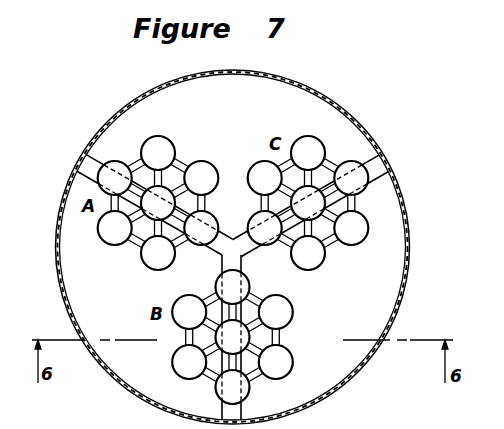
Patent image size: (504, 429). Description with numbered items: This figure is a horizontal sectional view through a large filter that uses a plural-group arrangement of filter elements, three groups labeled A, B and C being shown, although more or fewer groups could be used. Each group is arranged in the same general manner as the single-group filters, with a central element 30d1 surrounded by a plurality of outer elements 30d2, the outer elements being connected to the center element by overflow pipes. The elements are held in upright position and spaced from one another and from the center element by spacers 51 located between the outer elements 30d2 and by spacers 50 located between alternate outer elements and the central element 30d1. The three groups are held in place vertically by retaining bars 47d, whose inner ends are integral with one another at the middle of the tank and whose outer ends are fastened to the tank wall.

The retaining bars 47d is at (252, 266).
The spacers 50 is at (136, 242).
The central element 30d1 is at (282, 335).
The outer elements 30d2 is at (297, 269).
The spacers 51 is at (360, 207).